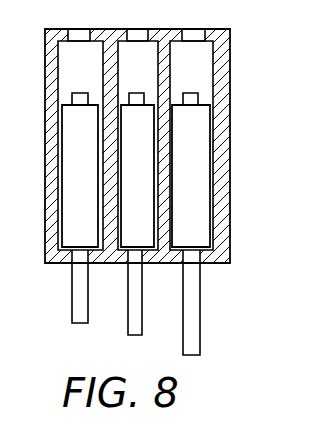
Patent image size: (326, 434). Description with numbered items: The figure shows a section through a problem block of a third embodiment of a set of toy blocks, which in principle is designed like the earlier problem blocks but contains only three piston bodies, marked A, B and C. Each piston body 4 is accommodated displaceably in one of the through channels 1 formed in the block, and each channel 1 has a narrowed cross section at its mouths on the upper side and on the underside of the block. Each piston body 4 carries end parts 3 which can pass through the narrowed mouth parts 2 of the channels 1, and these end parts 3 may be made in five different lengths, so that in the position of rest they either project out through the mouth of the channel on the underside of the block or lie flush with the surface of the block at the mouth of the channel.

The channel 1 is at (211, 80).
The narrowed mouth part 2 is at (198, 44).
The end part 3 is at (192, 97).
The piston body 4 is at (199, 170).